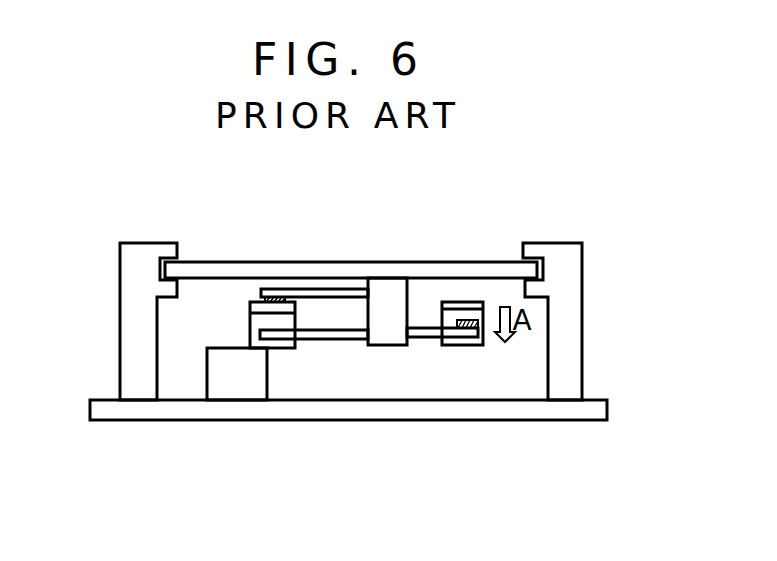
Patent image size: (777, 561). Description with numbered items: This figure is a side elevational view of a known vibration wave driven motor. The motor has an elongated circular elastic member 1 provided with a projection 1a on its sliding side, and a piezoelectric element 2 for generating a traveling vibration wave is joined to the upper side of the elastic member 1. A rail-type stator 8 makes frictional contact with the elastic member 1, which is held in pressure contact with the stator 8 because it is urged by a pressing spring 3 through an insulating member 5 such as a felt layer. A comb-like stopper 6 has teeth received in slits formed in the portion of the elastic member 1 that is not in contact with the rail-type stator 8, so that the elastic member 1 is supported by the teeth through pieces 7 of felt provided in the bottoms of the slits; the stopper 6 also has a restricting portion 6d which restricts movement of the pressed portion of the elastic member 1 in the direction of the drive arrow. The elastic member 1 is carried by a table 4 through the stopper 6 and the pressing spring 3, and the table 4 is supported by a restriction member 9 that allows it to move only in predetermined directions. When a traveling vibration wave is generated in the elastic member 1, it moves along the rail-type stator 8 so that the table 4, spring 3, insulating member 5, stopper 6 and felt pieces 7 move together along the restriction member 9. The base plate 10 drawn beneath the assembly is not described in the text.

The elastic member 1 is at (250, 313).
The projection 1a is at (482, 345).
The piezoelectric element 2 is at (250, 303).
The pressing spring 3 is at (325, 292).
The table 4 is at (410, 267).
The insulating member 5 is at (263, 300).
The comb-like stopper 6 is at (425, 340).
The restricting portion 6d is at (330, 343).
The pieces of felt 7 is at (458, 328).
The rail-type stator 8 is at (230, 388).
The restriction member 9 is at (133, 322).
The base plate 10 is at (560, 410).